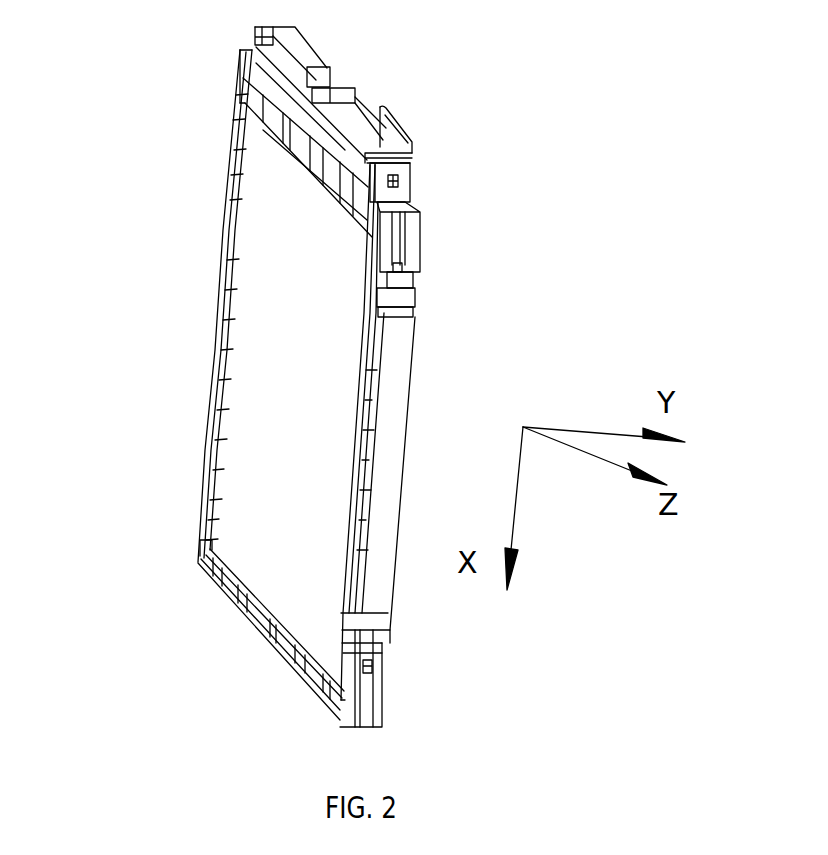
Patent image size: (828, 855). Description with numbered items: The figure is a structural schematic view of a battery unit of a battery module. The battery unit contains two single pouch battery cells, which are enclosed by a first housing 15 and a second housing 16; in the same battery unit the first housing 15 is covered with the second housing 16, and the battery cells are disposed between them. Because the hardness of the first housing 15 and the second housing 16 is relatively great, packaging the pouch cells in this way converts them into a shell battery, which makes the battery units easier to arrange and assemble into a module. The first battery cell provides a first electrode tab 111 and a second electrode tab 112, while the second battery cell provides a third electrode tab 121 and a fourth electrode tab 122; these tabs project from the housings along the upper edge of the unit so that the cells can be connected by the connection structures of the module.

The first housing 15 is at (287, 390).
The first electrode tab 111 is at (288, 53).
The second electrode tab 112 is at (274, 99).
The fourth electrode tab 122 is at (272, 66).
The third electrode tab 121 is at (407, 142).
The second housing 16 is at (413, 237).